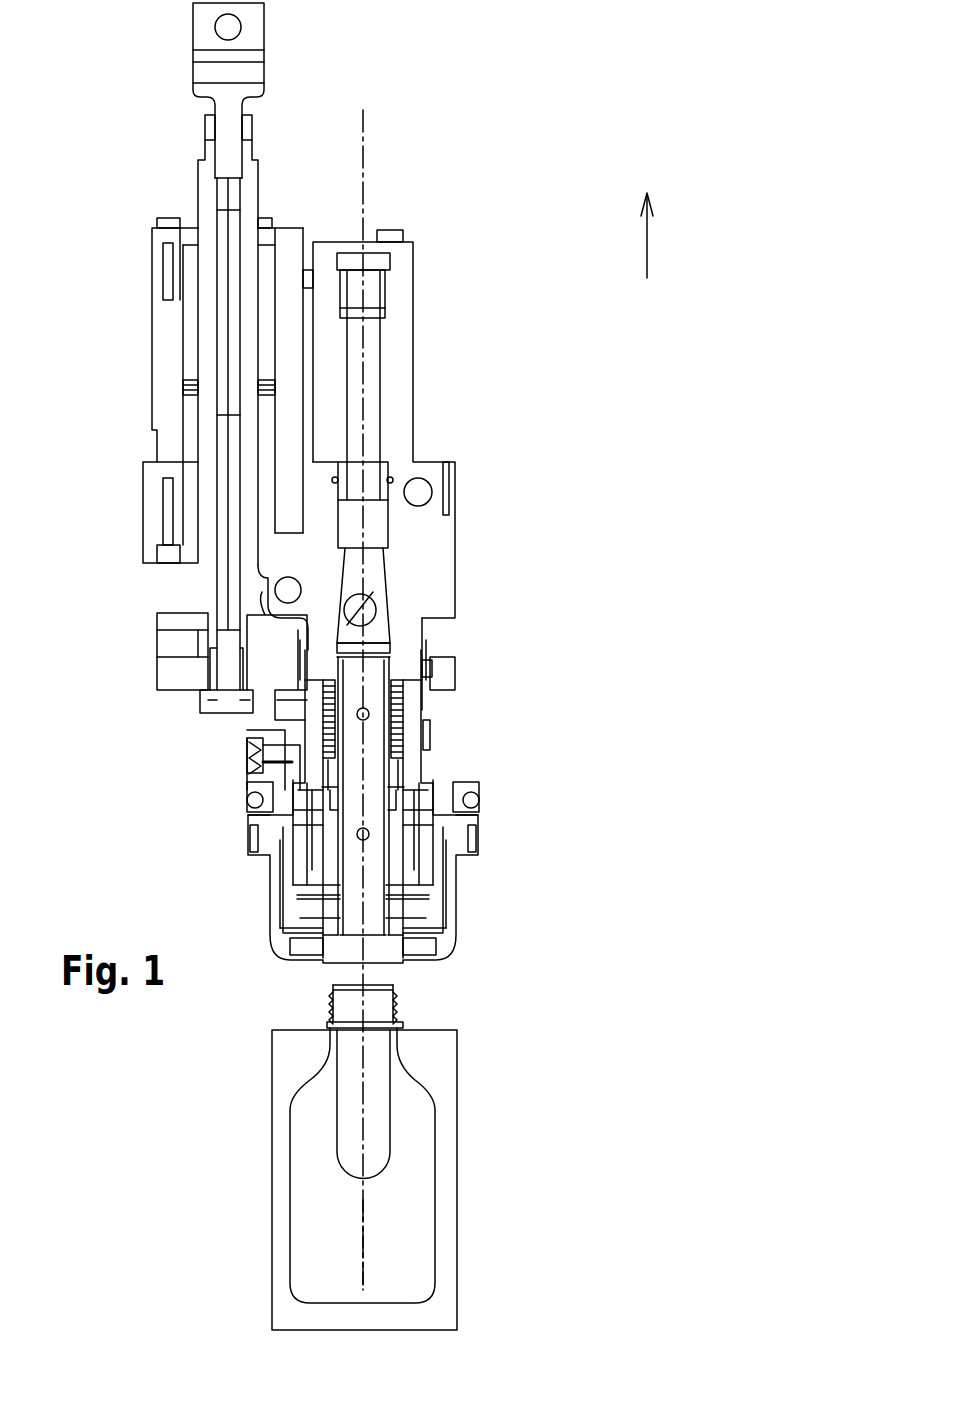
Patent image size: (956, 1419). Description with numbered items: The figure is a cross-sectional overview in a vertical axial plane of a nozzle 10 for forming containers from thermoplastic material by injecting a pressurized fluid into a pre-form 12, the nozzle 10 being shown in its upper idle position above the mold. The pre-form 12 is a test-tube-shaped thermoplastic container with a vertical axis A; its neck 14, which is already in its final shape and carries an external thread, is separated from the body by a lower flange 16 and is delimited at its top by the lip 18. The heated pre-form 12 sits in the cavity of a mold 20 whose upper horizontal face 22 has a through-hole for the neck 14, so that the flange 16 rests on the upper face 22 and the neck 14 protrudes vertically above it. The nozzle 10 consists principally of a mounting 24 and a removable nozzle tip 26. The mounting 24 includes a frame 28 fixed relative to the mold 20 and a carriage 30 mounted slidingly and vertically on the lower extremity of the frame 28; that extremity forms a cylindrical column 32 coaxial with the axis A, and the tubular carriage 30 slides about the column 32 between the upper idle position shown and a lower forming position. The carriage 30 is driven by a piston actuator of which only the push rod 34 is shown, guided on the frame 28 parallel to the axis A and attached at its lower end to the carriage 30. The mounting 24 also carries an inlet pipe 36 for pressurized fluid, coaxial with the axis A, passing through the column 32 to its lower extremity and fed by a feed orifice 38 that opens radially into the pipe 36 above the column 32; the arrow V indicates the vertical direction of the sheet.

The nozzle 10 is at (488, 200).
The pre-form 12 is at (375, 1100).
The neck 14 is at (377, 1003).
The lower flange 16 is at (333, 1018).
The lip 18 is at (346, 986).
The mold 20 is at (445, 1172).
The upper horizontal face 22 is at (443, 1030).
The mounting 24 is at (512, 237).
The removable nozzle tip 26 is at (512, 778).
The frame 28 is at (420, 568).
The carriage 30 is at (447, 698).
The cylindrical column 32 is at (317, 720).
The push rod 34 is at (206, 588).
The inlet pipe 36 is at (378, 633).
The feed orifice 38 is at (340, 633).
The axis A is at (363, 1265).
The direction of movement V is at (660, 235).